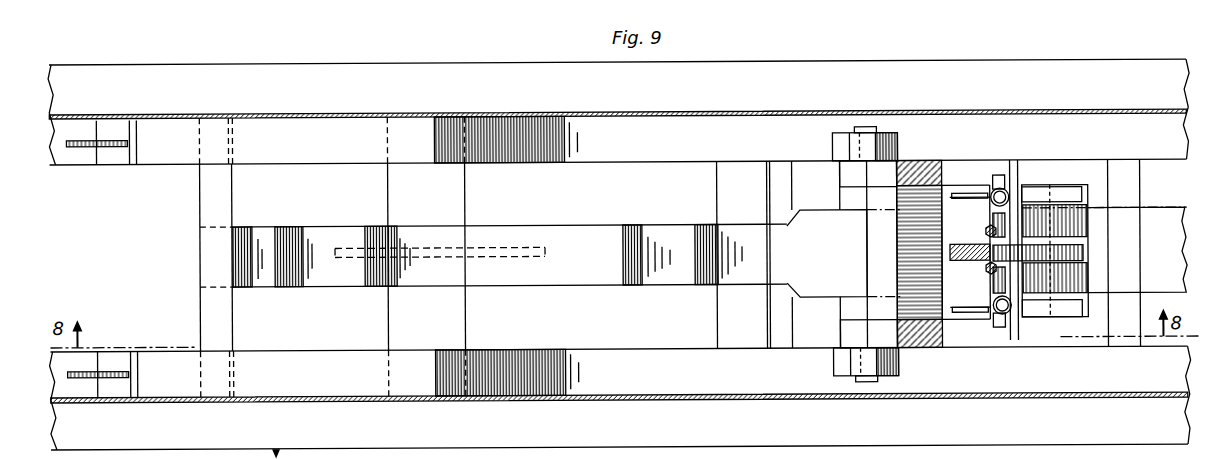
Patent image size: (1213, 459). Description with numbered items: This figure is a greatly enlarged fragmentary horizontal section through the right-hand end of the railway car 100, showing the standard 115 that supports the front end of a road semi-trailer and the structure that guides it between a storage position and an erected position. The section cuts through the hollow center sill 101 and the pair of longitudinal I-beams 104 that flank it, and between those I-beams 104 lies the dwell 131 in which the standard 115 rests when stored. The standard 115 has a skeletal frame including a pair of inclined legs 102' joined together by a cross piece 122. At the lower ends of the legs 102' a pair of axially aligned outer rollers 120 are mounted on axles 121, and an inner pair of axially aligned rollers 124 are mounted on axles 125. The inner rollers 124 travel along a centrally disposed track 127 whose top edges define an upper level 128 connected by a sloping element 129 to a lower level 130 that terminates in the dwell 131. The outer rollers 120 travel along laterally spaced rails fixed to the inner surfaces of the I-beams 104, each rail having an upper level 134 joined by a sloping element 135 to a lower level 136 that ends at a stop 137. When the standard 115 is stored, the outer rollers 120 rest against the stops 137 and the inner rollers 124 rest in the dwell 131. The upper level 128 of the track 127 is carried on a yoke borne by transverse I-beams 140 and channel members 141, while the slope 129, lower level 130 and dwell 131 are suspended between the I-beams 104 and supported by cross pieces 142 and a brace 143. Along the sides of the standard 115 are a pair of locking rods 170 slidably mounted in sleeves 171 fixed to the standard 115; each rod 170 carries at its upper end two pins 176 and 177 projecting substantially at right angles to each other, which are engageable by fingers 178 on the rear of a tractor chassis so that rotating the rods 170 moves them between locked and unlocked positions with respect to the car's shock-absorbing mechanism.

The railway car 100 is at (148, 256).
The hollow center sill 101 is at (950, 257).
The inclined legs 102' is at (948, 254).
The I-beams 104 is at (478, 118).
The standard 115 is at (1085, 195).
The rollers 120 is at (893, 152).
The axles 121 is at (868, 132).
The cross piece 122 is at (875, 242).
The rollers 124 is at (1090, 240).
The axles 125 is at (1088, 273).
The track 127 is at (720, 236).
The upper level 128 is at (803, 222).
The sloping element 129 is at (670, 238).
The lower level 130 is at (530, 238).
The dwell 131 is at (291, 242).
The upper level 134 is at (718, 132).
The sloping element 135 is at (490, 150).
The lower level 136 is at (284, 134).
The stop 137 is at (137, 141).
The transverse I-beams 140 is at (1116, 166).
The channel members 141 is at (802, 175).
The cross pieces 142 is at (547, 254).
The brace 143 is at (393, 187).
The locking rods 170 is at (1003, 195).
The sleeves 171 is at (1014, 325).
The pin 176 is at (1002, 222).
The pin 177 is at (997, 182).
The fingers 178 is at (985, 236).